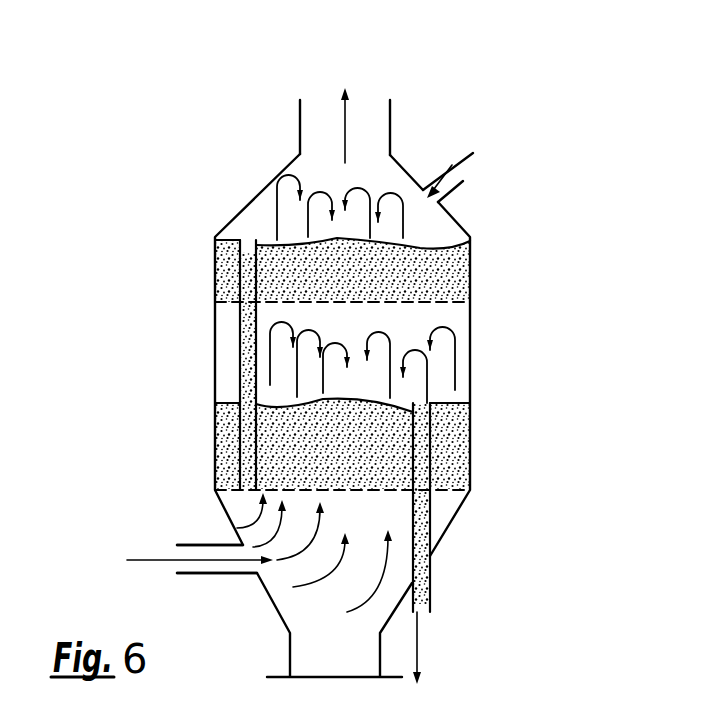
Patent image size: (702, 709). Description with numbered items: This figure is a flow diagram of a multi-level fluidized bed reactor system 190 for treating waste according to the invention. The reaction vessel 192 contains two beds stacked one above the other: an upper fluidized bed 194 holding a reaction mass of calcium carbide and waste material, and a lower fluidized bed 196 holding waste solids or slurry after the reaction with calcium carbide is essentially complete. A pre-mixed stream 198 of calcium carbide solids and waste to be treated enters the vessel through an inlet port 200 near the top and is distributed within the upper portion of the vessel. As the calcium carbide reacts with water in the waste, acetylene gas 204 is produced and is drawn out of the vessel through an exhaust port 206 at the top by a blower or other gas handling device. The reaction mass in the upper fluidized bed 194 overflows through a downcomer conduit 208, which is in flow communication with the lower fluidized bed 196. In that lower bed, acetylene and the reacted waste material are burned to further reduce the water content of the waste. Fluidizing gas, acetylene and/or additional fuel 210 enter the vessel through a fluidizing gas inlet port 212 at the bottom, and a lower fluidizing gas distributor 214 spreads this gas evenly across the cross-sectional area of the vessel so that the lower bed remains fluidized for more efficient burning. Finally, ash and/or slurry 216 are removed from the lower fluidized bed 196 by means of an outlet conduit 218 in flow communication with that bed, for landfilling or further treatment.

The multi-level fluidized bed reactor system 190 is at (522, 602).
The reaction vessel 192 is at (467, 385).
The upper fluidized bed 194 is at (447, 273).
The lower fluidized bed 196 is at (448, 442).
The pre-mixed stream 198 is at (477, 155).
The inlet port 200 is at (462, 183).
The acetylene gas 204 is at (347, 130).
The exhaust port 206 is at (392, 125).
The downcomer conduit 208 is at (240, 333).
The fluidizing gas, acetylene and/or additional fuel 210 is at (142, 555).
The fluidizing gas inlet port 212 is at (208, 577).
The lower fluidizing gas distributor 214 is at (360, 493).
The ash and/or slurry 216 is at (418, 643).
The outlet conduit 218 is at (430, 575).